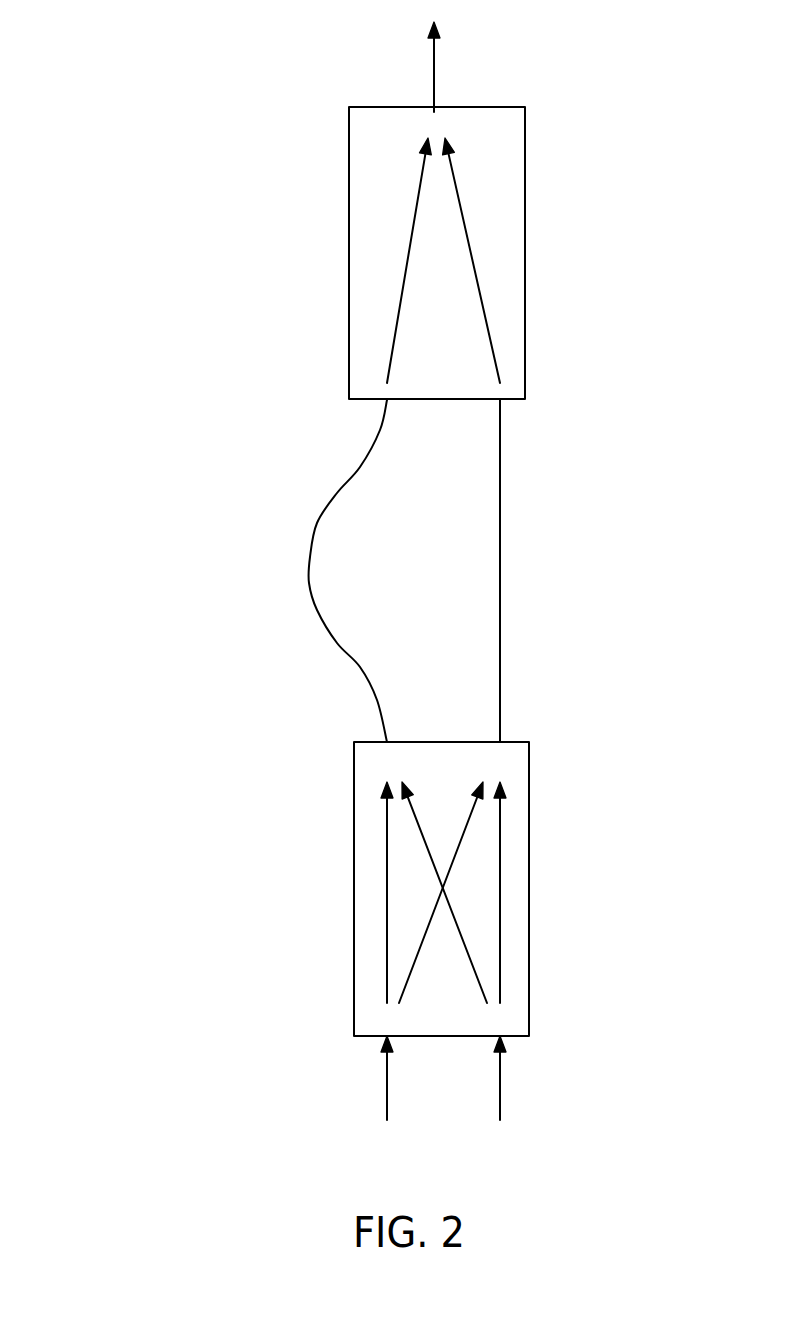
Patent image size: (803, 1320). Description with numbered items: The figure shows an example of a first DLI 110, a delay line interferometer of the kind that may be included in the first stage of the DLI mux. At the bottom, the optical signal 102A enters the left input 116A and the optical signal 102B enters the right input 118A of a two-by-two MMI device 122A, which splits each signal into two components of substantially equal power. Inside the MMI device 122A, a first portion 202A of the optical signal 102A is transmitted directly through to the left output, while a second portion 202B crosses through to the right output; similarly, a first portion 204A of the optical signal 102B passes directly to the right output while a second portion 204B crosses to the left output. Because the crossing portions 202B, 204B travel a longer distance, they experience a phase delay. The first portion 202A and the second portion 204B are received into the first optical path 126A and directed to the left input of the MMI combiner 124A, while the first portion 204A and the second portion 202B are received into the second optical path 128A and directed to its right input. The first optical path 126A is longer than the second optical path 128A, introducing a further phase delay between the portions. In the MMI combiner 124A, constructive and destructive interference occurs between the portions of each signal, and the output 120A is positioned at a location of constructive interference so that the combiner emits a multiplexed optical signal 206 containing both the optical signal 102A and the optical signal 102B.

The first DLI 110 is at (113, 130).
The multiplexed optical signal 206 is at (434, 67).
The output 120A is at (434, 106).
The MMI combiner 124A is at (349, 212).
The first optical path 126A is at (310, 555).
The second optical path 128A is at (500, 517).
The 2×2 MMI device 122A is at (354, 900).
The first portion of the optical signal 102A 202A is at (387, 853).
The first portion of the optical signal 102B 204A is at (500, 855).
The second portion of the optical signal 102A 202B is at (473, 803).
The second portion of the optical signal 102B 204B is at (412, 817).
The left input 116A is at (383, 1038).
The right input 118A is at (503, 1040).
The optical signal 102A is at (385, 1105).
The optical signal 102B is at (500, 1105).